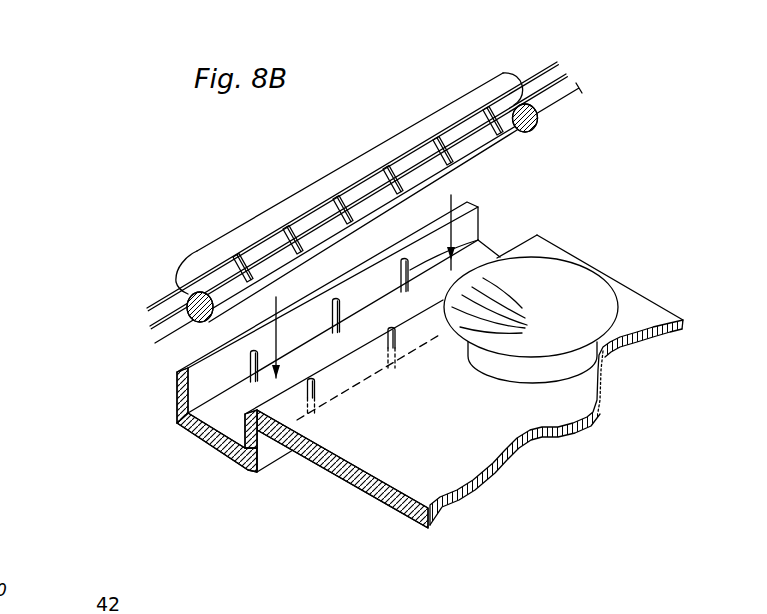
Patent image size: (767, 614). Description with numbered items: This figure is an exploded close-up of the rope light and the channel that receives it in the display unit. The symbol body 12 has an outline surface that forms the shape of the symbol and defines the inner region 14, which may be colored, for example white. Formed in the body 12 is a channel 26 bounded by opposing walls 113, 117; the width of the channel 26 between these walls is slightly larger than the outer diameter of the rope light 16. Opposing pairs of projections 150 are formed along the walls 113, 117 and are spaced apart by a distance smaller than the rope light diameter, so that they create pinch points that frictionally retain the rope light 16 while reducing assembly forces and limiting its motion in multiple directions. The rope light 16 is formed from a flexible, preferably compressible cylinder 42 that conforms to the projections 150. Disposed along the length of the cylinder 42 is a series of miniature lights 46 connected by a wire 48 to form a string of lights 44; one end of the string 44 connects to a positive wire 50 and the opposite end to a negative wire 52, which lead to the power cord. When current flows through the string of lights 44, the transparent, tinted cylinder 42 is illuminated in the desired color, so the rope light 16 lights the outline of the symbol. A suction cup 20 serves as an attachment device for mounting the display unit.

The symbol body 12 is at (457, 466).
The inner region 14 is at (388, 455).
The elongated flexible lighting strip (rope light) 16 is at (375, 142).
The suction cup 20 is at (571, 279).
The channel 26 is at (218, 390).
The flexible cylinder 42 is at (238, 243).
The string of lights 44 is at (480, 143).
The miniature lights 46 is at (497, 118).
The wire 48 is at (560, 104).
The positive wire 50 is at (540, 70).
The negative wire 52 is at (568, 75).
The channel wall (outline surface) 113 is at (243, 420).
The channel wall 117 is at (196, 391).
The projections 150 is at (479, 229).